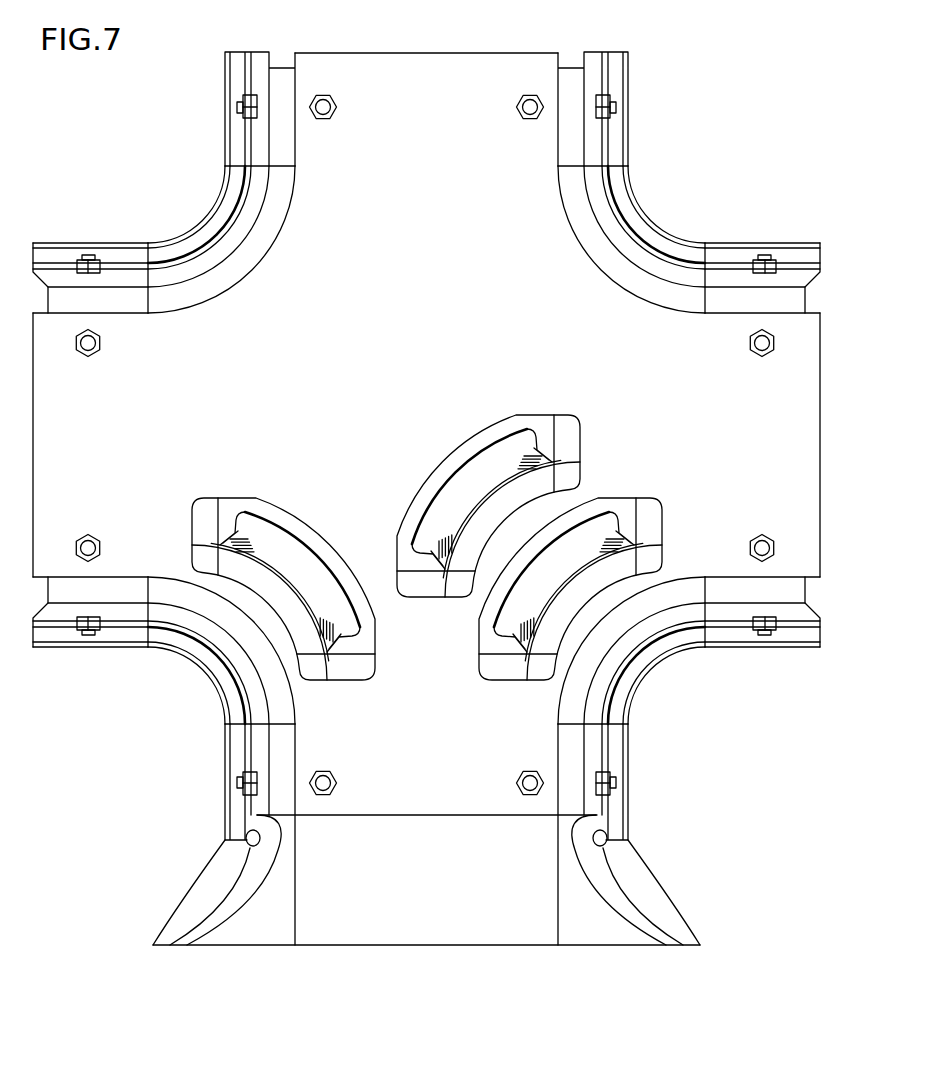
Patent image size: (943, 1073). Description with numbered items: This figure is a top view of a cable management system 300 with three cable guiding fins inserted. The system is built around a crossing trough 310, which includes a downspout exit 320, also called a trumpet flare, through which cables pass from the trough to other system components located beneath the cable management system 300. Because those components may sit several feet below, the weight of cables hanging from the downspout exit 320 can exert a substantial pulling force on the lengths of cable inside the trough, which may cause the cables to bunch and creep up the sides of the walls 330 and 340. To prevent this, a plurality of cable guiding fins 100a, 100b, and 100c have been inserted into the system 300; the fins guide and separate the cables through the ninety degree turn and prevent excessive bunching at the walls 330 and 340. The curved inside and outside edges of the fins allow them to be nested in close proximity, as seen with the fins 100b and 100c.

The cable management system 300 is at (730, 167).
The crossing trough 310 is at (637, 207).
The downspout exit 320 is at (463, 896).
The wall 330 is at (213, 648).
The wall 340 is at (640, 648).
The cable guiding fin 100a is at (266, 552).
The cable guiding fin 100b is at (503, 467).
The cable guiding fin 100c is at (593, 550).